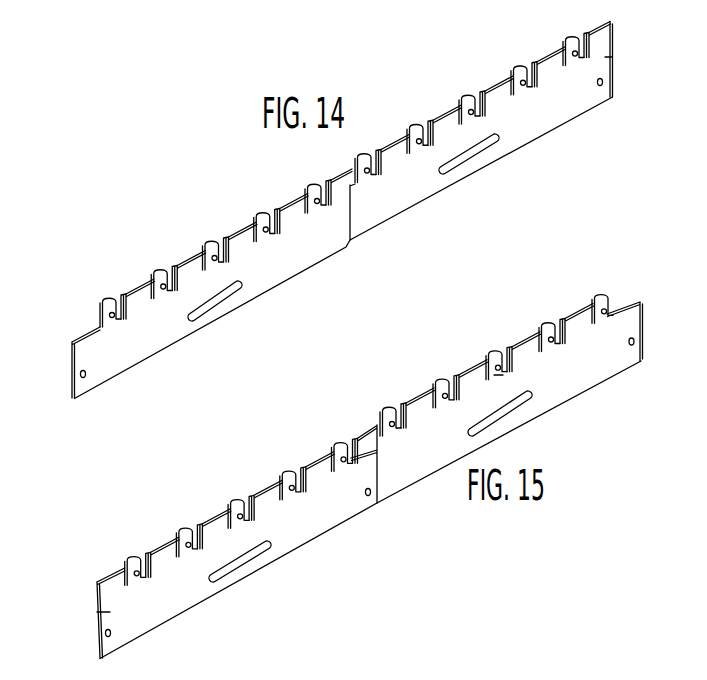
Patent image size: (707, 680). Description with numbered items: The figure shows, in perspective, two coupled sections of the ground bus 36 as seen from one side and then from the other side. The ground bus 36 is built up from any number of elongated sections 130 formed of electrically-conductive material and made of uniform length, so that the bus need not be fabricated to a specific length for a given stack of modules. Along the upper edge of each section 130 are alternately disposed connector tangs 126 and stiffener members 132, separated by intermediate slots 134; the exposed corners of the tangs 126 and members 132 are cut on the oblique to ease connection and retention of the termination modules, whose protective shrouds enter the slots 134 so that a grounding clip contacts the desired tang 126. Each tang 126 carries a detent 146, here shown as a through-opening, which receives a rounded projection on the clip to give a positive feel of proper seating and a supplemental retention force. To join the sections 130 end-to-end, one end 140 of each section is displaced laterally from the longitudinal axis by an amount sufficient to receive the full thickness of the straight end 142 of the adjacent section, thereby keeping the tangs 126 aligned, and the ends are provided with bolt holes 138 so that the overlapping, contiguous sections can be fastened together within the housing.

In FIG. 14, the ground bus 36 is at (313, 175).
In FIG. 15, the ground bus 36 is at (361, 413).
In FIG. 14, the connector tang 126 is at (521, 77).
In FIG. 15, the connector tang 126 is at (552, 335).
In FIG. 14, the bus section 130 is at (538, 127).
In FIG. 15, the bus section 130 is at (546, 400).
In FIG. 14, the stiffener member 132 is at (541, 58).
In FIG. 15, the stiffener member 132 is at (526, 333).
In FIG. 14, the intermediate slot 134 is at (509, 78).
In FIG. 15, the intermediate slot 134 is at (506, 356).
In FIG. 14, the bolt hole 138 is at (80, 374).
In FIG. 15, the bolt hole 138 is at (105, 635).
In FIG. 14, the displaced end 140 is at (91, 341).
In FIG. 15, the displaced end 140 is at (637, 323).
In FIG. 14, the straight end 142 is at (608, 57).
In FIG. 15, the straight end 142 is at (98, 614).
In FIG. 15, the detent 146 is at (500, 377).